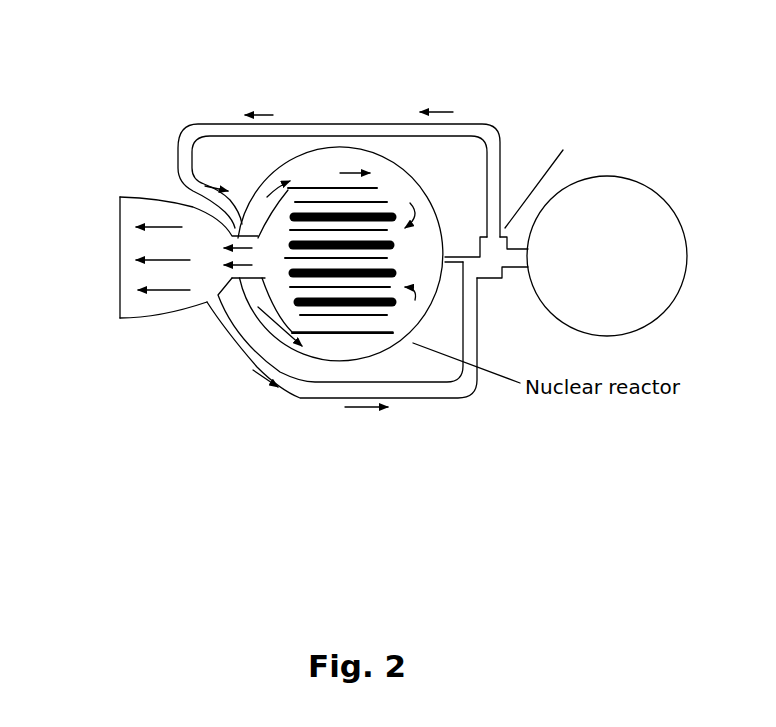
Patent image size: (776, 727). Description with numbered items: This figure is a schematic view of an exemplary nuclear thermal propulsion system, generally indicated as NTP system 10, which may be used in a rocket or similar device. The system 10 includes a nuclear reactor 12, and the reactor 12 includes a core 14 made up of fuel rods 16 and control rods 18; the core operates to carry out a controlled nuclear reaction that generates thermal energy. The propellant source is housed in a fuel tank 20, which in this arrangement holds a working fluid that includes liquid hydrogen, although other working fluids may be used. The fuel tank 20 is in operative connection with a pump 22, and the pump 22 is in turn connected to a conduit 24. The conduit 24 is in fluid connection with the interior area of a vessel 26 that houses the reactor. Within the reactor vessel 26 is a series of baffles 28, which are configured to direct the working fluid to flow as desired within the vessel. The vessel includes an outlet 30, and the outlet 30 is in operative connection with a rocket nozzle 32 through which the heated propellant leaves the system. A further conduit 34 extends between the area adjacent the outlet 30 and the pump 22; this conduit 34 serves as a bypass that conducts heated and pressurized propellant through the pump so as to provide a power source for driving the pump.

The NTP system 10 is at (152, 504).
The nuclear reactor 12 is at (400, 347).
The core 14 is at (402, 197).
The fuel rods 16 is at (395, 240).
The control rods 18 is at (398, 258).
The fuel tank 20 is at (660, 190).
The pump 22 is at (492, 284).
The conduit 24 is at (393, 120).
The vessel 26 is at (317, 187).
The baffles 28 is at (320, 187).
The outlet 30 is at (235, 328).
The rocket nozzle 32 is at (140, 323).
The conduit 34 is at (320, 398).